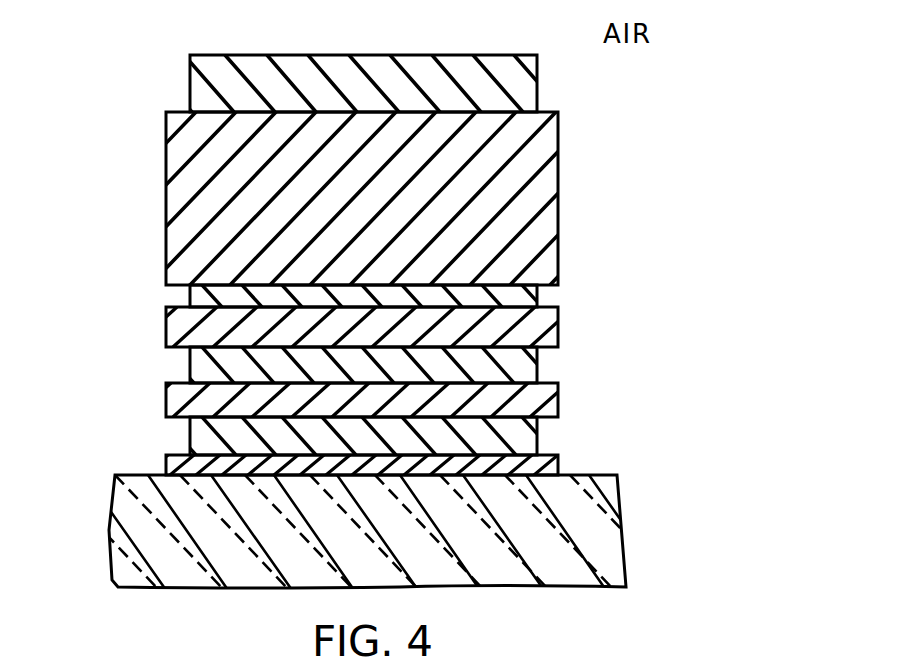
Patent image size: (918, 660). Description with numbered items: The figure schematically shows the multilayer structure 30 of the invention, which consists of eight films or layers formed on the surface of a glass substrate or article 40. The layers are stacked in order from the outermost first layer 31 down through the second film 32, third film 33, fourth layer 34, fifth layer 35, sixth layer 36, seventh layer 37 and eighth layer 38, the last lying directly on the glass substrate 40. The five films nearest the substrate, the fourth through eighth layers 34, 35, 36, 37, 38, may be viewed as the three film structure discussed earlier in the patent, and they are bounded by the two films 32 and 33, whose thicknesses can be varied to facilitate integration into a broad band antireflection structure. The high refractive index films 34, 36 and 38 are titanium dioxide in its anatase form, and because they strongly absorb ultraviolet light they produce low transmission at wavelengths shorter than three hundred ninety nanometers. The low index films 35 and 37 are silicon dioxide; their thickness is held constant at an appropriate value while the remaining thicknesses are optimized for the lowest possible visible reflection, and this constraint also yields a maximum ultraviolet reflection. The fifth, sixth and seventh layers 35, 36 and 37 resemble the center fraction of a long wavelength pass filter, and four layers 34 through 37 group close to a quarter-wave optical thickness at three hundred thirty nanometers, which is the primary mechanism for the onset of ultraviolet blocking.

The structure 30 is at (597, 212).
The first layer 31 is at (189, 80).
The second film 32 is at (165, 200).
The third film 33 is at (189, 297).
The fourth layer 34 is at (165, 327).
The fifth layer 35 is at (189, 365).
The sixth layer 36 is at (165, 400).
The seventh layer 37 is at (189, 436).
The eighth layer 38 is at (165, 462).
The glass substrate 40 is at (114, 532).